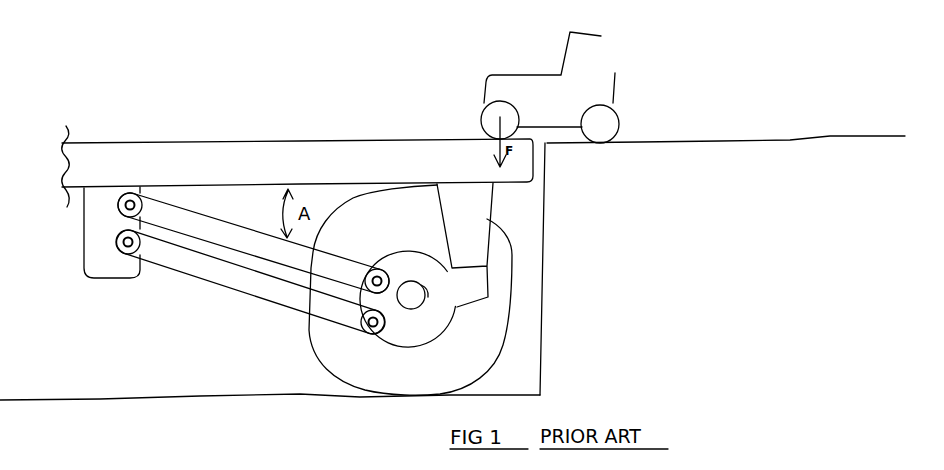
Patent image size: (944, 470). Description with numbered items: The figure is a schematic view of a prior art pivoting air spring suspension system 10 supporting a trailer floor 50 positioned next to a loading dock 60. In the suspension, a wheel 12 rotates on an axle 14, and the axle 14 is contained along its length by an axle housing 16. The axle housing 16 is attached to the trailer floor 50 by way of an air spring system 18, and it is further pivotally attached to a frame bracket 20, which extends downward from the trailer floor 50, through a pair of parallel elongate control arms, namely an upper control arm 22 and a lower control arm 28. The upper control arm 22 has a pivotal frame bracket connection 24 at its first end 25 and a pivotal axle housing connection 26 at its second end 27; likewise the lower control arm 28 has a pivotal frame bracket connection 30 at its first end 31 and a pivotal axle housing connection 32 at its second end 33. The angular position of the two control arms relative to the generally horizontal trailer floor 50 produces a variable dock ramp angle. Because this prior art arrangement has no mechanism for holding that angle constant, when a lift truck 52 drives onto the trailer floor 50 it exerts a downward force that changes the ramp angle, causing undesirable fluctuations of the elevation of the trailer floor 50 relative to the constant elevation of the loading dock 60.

The pivoting air spring suspension system 10 is at (243, 379).
The wheel 12 is at (470, 372).
The axle 14 is at (417, 299).
The axle housing 16 is at (442, 322).
The air spring system 18 is at (482, 203).
The frame bracket 20 is at (110, 270).
The upper control arm 22 is at (180, 213).
The pivotal frame bracket connection 24 is at (134, 208).
The first end 25 is at (116, 201).
The pivotal axle housing connection 26 is at (381, 271).
The second end 27 is at (386, 278).
The lower control arm 28 is at (182, 265).
The pivotal frame bracket connection 30 is at (132, 244).
The first end 31 is at (116, 240).
The pivotal axle housing connection 32 is at (382, 315).
The second end 33 is at (378, 328).
The trailer floor 50 is at (253, 148).
The forklift vehicle 52 is at (605, 70).
The loading dock 60 is at (718, 179).